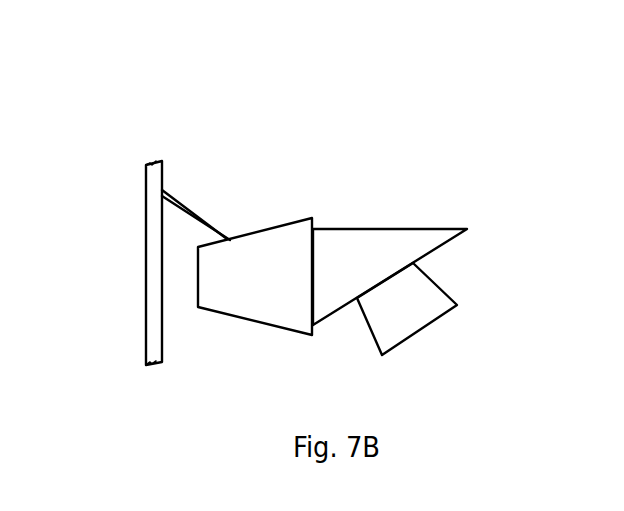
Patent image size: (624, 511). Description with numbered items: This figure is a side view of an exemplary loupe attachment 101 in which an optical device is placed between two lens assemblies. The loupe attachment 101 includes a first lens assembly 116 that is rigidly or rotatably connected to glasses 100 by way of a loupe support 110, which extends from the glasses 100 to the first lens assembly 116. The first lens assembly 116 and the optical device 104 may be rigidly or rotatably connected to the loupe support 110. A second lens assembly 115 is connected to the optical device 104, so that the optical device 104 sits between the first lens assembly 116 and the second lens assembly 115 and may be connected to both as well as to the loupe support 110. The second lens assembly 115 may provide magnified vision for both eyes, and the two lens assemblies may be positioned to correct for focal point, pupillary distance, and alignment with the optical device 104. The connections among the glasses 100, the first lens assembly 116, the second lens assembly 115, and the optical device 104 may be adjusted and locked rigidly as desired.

The glasses 100 is at (147, 208).
The loupe attachment 101 is at (367, 121).
The optical device 104 is at (367, 265).
The loupe support 110 is at (197, 212).
The second lens assembly 115 is at (422, 293).
The first lens assembly 116 is at (255, 285).